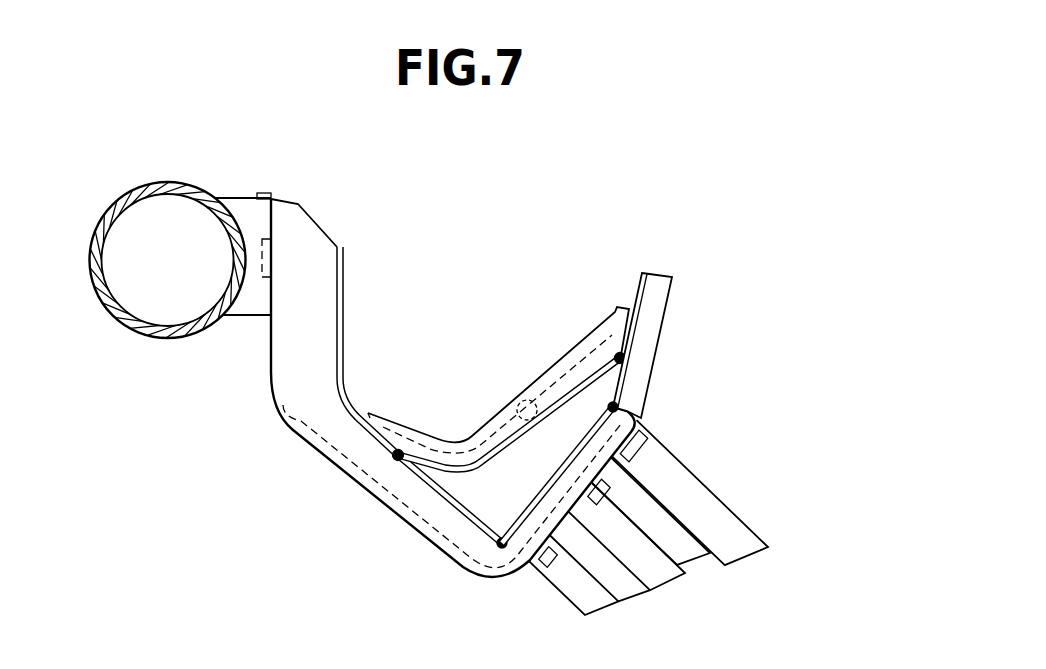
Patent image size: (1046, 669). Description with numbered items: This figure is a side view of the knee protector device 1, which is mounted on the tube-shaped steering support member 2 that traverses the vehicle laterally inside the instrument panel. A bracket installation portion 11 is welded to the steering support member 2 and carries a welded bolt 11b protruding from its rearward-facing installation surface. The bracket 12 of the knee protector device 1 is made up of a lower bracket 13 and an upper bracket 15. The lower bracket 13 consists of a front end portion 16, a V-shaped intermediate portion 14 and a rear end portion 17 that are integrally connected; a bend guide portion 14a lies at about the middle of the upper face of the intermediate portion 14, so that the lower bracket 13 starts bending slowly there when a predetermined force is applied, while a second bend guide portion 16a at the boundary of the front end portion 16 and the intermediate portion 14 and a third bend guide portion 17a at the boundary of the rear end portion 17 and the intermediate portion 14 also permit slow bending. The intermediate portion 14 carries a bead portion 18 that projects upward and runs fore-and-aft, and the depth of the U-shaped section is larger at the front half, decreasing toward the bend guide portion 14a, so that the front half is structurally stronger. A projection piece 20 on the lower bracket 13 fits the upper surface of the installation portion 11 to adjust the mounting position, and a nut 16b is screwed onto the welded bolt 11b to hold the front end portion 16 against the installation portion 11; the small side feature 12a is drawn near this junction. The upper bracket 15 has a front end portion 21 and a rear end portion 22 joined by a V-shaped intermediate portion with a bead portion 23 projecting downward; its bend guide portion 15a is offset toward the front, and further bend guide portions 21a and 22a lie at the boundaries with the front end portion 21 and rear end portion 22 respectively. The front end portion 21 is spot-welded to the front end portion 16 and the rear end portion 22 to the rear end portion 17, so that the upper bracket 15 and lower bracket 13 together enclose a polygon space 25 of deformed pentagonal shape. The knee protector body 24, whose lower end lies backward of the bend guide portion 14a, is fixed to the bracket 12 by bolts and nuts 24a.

The knee protector device 1 is at (536, 412).
The steering support member 2 is at (157, 181).
The bracket installation portion 11 is at (305, 242).
The welded bolt 11b is at (285, 254).
The bracket 12 is at (543, 405).
The boss 12a is at (272, 295).
The lower bracket 13 is at (597, 418).
The intermediate portion 14 is at (432, 412).
The bend guide portion 14a is at (497, 548).
The upper bracket 15 is at (543, 405).
The bend guide portion 15a is at (463, 478).
The front end portion 16 is at (421, 395).
The second bend guide portion 16a is at (345, 392).
The nut 16b is at (283, 250).
The rear end portion 17 is at (684, 336).
The third bend guide portion 17a is at (616, 407).
The bead portion 18 is at (357, 478).
The projection piece 20 is at (267, 194).
The front end portion 21 is at (375, 412).
The bend guide portion 21a is at (403, 450).
The rear end portion 22 is at (620, 324).
The bend guide portion 22a is at (605, 327).
The bead portion 23 is at (525, 421).
The knee protector body 24 is at (685, 517).
The bolts and nuts 24a is at (610, 495).
The polygon space 25 is at (510, 503).